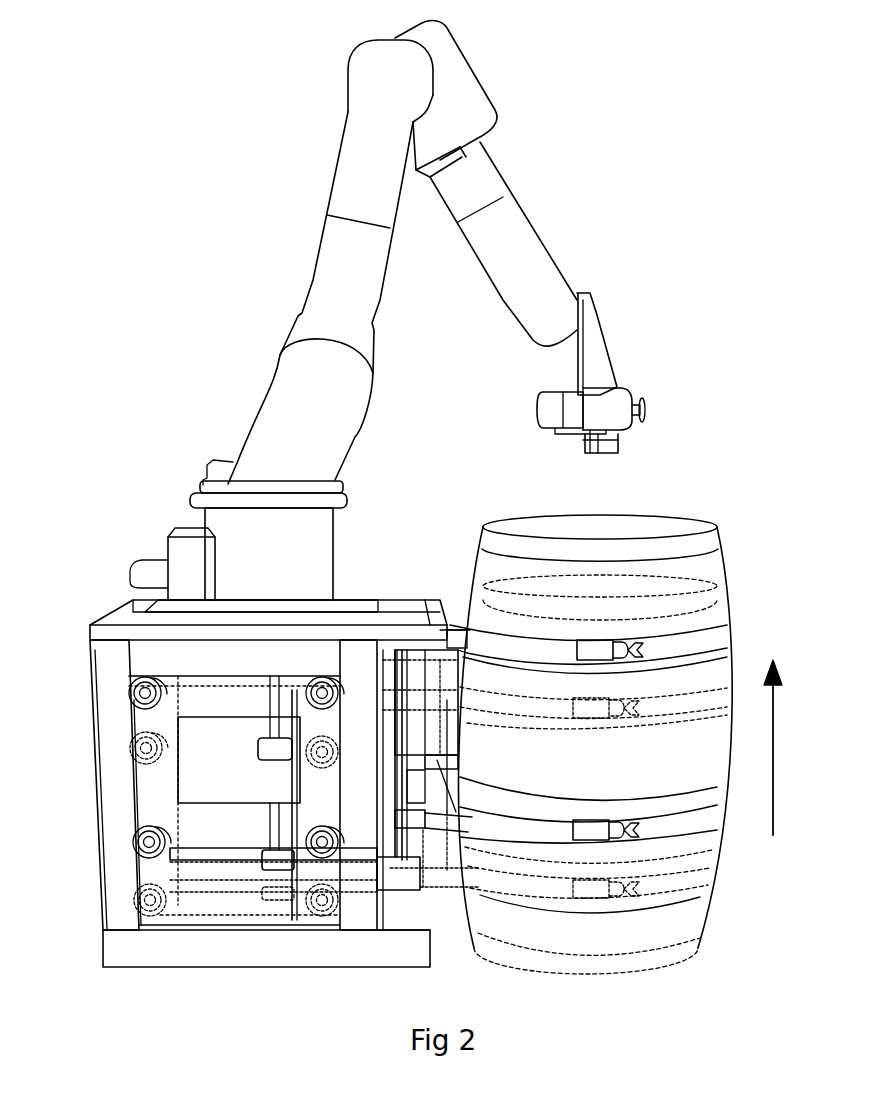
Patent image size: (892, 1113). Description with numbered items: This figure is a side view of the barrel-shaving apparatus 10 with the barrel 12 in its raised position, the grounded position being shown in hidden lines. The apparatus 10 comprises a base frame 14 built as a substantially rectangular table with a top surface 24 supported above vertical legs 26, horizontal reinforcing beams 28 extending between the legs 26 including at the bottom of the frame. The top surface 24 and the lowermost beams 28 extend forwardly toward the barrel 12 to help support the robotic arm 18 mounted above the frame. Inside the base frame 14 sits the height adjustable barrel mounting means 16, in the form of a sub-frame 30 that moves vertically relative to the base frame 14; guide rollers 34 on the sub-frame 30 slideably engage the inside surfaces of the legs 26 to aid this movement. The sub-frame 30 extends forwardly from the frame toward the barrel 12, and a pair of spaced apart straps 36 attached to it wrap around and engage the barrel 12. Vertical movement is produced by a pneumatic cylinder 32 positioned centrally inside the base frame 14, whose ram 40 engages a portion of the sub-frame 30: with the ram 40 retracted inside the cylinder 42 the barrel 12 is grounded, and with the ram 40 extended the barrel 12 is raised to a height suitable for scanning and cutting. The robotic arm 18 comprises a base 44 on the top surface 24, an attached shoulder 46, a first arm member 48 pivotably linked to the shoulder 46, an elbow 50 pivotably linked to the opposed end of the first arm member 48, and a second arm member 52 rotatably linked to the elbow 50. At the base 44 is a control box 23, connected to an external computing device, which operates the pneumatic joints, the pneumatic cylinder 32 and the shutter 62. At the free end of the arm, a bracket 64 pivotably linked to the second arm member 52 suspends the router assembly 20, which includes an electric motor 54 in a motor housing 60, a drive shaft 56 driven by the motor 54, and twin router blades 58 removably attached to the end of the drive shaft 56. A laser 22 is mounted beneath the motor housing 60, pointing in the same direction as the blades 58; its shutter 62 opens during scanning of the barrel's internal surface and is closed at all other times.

The apparatus 10 is at (240, 246).
The barrel 12 is at (732, 585).
The base frame 14 is at (98, 846).
The height adjustable barrel mounting means 16 is at (206, 858).
The robotic arm 18 is at (506, 152).
The router assembly 20 is at (650, 378).
The laser 22 is at (624, 440).
The control box 23 is at (183, 547).
The top surface 24 is at (106, 620).
The vertical legs 26 is at (115, 748).
The horizontal reinforcing beams 28 is at (322, 944).
The sub-frame 30 is at (155, 790).
The pneumatic cylinder 32 is at (254, 866).
The guide rollers 34 is at (142, 695).
The straps 36 is at (523, 642).
The ram 40 is at (268, 737).
The cylinder 42 is at (275, 793).
The base 44 is at (306, 548).
The shoulder 46 is at (340, 440).
The first arm member 48 is at (382, 288).
The elbow 50 is at (462, 86).
The second arm member 52 is at (530, 255).
The electric motor 54 is at (580, 410).
The drive shaft 56 is at (645, 406).
The twin router blades 58 is at (644, 417).
The motor housing 60 is at (612, 400).
The shutter 62 is at (612, 453).
The bracket 64 is at (595, 335).